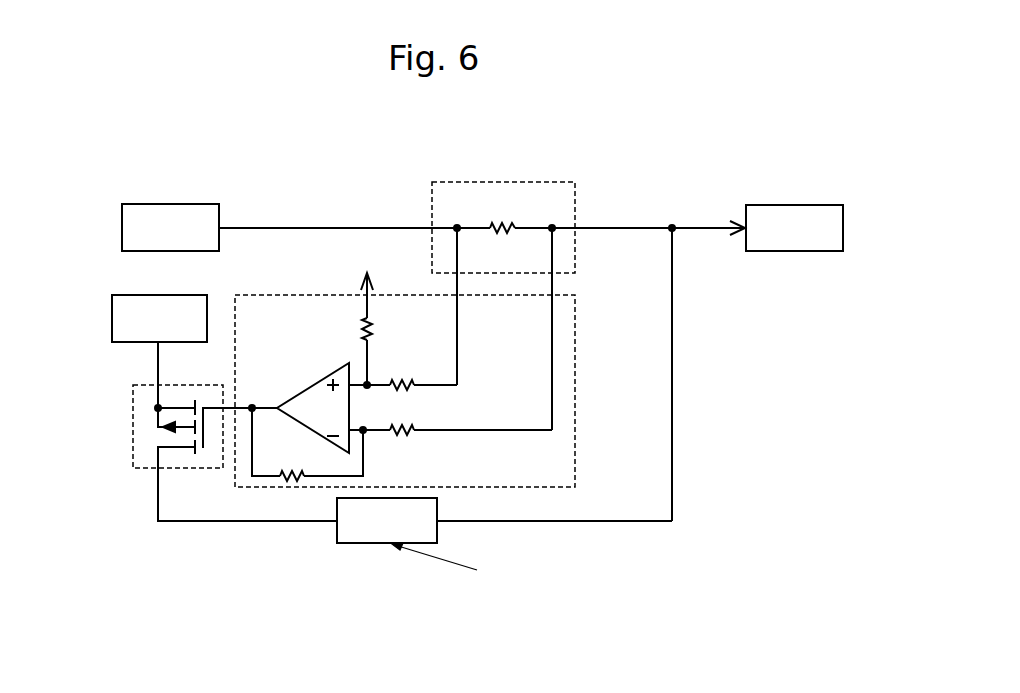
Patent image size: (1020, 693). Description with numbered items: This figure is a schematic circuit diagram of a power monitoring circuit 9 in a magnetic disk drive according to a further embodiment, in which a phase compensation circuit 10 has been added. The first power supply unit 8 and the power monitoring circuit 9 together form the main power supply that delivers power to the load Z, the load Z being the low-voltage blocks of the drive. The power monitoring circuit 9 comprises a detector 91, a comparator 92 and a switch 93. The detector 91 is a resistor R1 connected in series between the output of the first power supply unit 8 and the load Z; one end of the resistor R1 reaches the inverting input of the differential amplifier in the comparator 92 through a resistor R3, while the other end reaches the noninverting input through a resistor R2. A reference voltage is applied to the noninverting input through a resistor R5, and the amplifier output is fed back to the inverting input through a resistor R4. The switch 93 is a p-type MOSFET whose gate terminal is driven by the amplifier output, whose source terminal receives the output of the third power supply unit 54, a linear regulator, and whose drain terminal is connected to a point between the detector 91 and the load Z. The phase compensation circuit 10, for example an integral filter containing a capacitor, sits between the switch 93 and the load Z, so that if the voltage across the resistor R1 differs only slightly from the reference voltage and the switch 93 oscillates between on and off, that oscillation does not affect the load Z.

The first power supply unit 8 is at (170, 227).
The power monitoring circuit 9 is at (630, 131).
The phase compensation circuit 10 is at (446, 554).
The third power supply unit 54 is at (159, 318).
The detector 91 is at (503, 192).
The comparator 92 is at (430, 370).
The switch 93 is at (133, 448).
The load Z is at (794, 228).
The resistor R1 is at (502, 214).
The resistor R2 is at (401, 374).
The resistor R3 is at (401, 441).
The resistor R4 is at (291, 461).
The resistor R5 is at (381, 325).